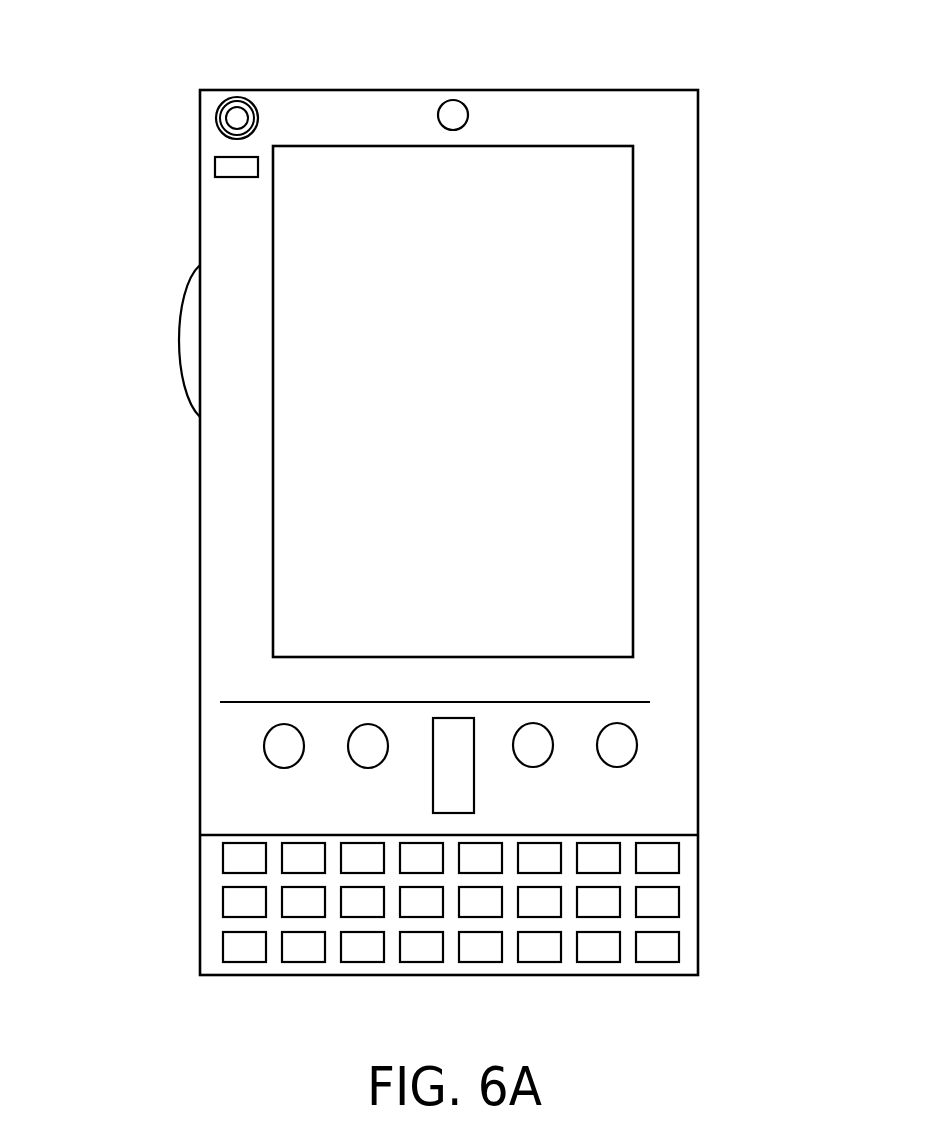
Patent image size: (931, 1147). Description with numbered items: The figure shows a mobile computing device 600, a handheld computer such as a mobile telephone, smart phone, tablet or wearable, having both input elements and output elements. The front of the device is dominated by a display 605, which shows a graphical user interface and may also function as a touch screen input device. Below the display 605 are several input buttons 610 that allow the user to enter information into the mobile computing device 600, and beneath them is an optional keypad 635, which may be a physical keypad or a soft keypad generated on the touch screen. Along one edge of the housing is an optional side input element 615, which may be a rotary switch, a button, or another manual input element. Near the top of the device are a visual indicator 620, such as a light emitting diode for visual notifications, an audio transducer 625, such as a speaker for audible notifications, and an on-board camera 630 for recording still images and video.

The mobile computing device 600 is at (685, 108).
The display 605 is at (385, 570).
The input buttons 610 is at (452, 772).
The side input element 615 is at (190, 340).
The visual indicator 620 is at (216, 172).
The audio transducer 625 is at (216, 119).
The on-board camera 630 is at (463, 115).
The keypad 635 is at (208, 952).